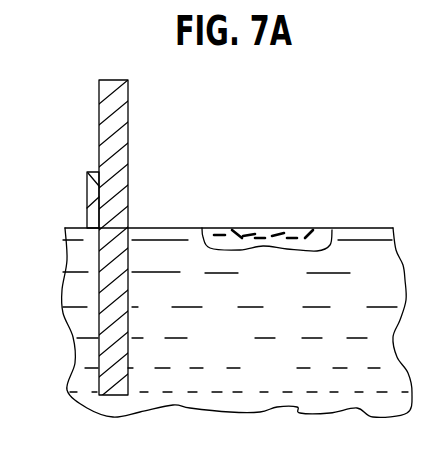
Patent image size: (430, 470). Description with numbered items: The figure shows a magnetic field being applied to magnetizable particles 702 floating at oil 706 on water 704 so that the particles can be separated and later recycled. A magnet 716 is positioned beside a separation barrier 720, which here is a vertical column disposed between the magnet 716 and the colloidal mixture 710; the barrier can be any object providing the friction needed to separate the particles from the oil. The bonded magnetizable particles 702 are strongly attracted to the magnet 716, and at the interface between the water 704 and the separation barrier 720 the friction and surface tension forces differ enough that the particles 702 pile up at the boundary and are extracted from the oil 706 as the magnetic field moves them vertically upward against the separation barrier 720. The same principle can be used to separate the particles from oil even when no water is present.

The magnetizable particles 702 is at (291, 229).
The water 704 is at (262, 358).
The oil 706 is at (339, 240).
The colloidal mixture 710 is at (256, 257).
The magnet 716 is at (87, 188).
The separation barrier 720 is at (108, 108).